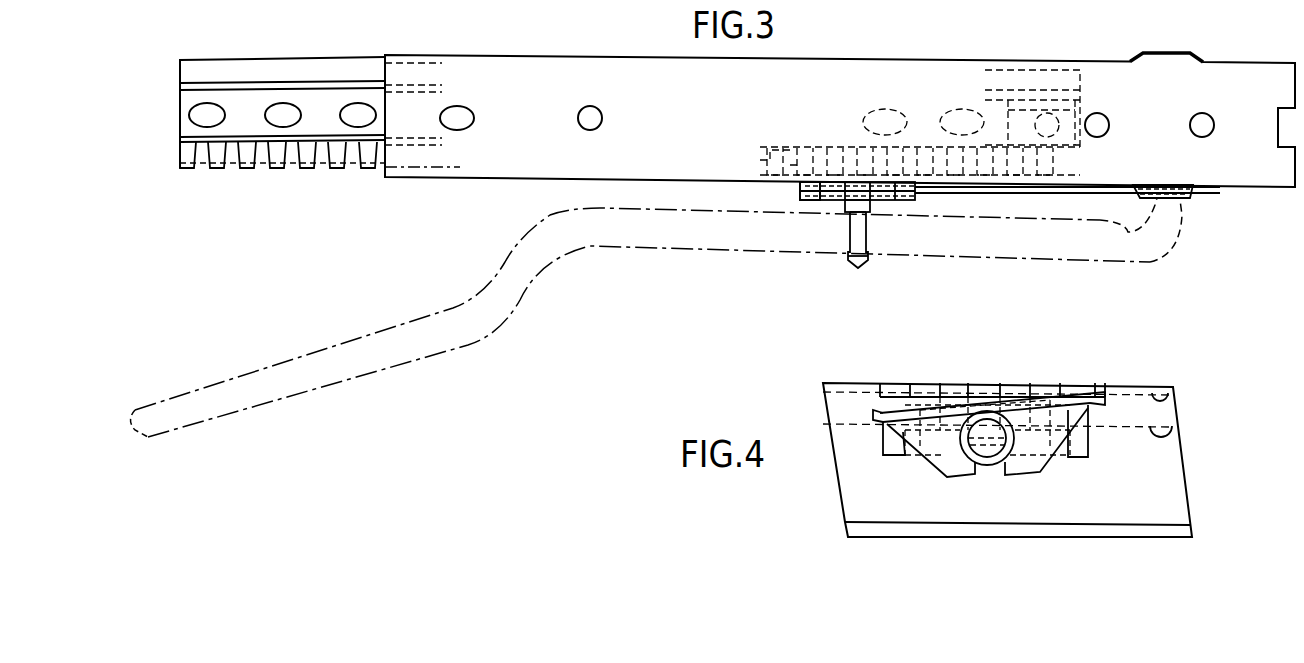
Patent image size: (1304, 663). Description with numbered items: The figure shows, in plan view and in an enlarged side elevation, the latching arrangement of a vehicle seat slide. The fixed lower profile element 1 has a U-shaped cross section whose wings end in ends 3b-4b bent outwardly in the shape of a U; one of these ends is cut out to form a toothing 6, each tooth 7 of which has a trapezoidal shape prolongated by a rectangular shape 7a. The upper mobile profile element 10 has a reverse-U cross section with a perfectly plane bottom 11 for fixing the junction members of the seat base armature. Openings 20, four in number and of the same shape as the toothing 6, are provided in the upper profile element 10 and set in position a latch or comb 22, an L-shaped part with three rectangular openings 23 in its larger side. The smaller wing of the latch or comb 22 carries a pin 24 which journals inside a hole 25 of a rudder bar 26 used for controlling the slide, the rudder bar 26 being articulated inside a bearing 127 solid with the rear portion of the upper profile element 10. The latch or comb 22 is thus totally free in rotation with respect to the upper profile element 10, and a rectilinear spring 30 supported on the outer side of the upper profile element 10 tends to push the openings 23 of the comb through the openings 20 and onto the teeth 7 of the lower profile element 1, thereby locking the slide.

In FIG. 3, the fixed lower profile element 1 is at (311, 60).
In FIG. 3, the upper mobile profile element 10 is at (1225, 75).
In FIG. 4, the upper mobile profile element 10 is at (903, 380).
In FIG. 3, the tooth 7 is at (210, 165).
In FIG. 3, the toothing 6 is at (280, 178).
In FIG. 3, the rectangular shape 7a is at (332, 165).
In FIG. 3, the latch or comb 22 is at (800, 196).
In FIG. 4, the latch or comb 22 is at (1048, 410).
In FIG. 3, the rectangular openings 23 is at (820, 195).
In FIG. 3, the pin 24 is at (866, 235).
In FIG. 4, the pin 24 is at (983, 412).
In FIG. 3, the hole 25 is at (848, 230).
In FIG. 3, the spring 30 is at (1062, 193).
In FIG. 3, the bearing 127 is at (1190, 198).
In FIG. 3, the rudder bar 26 is at (512, 252).
In FIG. 4, the openings 20 is at (888, 385).
In FIG. 4, the bottom 11 is at (1172, 400).
In FIG. 4, the ends of the wings 3b-4b is at (1175, 445).